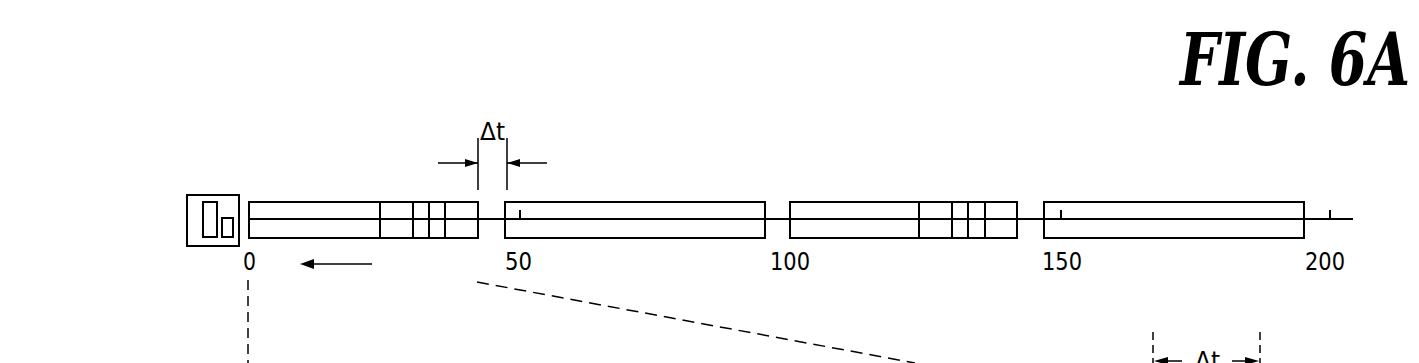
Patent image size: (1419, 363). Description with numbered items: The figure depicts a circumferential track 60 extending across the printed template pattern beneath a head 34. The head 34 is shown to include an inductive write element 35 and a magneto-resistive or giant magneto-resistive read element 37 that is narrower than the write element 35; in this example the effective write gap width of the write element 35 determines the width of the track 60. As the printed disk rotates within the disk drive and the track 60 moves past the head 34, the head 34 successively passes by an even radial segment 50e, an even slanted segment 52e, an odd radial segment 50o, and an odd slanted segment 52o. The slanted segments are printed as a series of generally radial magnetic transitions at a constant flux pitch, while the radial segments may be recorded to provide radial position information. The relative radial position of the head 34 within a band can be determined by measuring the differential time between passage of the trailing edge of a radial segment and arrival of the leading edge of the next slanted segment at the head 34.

The head 34 is at (187, 207).
The inductive write element 35 is at (209, 202).
The read element 37 is at (230, 218).
The even radial segment 50e is at (303, 202).
The even slanted segment 52e is at (737, 202).
The odd radial segment 50o is at (830, 202).
The odd slanted segment 52o is at (1071, 202).
The circumferential track 60 is at (1307, 215).